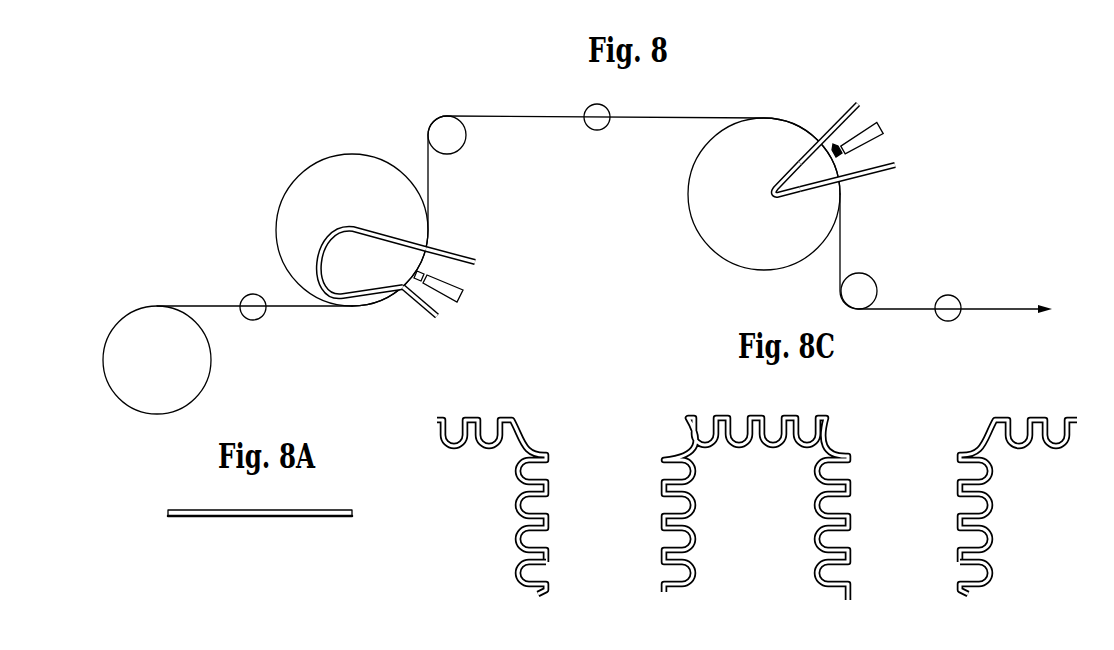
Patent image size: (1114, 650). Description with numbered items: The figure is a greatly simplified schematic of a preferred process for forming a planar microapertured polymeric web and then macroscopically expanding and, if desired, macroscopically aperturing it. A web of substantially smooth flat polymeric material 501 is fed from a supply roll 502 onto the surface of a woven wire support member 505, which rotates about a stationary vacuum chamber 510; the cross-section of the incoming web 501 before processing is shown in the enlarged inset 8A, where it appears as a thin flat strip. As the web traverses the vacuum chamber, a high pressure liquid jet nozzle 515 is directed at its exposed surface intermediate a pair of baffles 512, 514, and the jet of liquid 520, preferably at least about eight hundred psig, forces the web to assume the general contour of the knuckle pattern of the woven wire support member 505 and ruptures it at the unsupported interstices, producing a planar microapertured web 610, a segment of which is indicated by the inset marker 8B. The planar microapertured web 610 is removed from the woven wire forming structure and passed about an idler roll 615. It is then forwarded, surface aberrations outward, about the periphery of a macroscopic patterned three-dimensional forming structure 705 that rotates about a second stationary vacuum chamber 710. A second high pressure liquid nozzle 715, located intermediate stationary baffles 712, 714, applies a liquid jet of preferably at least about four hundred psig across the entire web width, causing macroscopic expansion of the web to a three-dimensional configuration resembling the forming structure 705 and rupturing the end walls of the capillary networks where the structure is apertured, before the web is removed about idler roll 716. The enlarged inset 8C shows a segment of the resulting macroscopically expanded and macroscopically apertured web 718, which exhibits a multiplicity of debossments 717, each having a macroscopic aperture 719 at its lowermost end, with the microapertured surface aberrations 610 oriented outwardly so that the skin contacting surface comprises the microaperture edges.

In FIG. 8, the web of substantially smooth flat polymeric material 501 is at (206, 306).
In FIG. 8A, the web of substantially smooth flat polymeric material 501 is at (210, 510).
In FIG. 8, the supply roll 502 is at (116, 331).
In FIG. 8, the woven wire support member 505 is at (317, 163).
In FIG. 8, the stationary vacuum chamber 510 is at (386, 230).
In FIG. 8, the baffle 512 is at (441, 315).
In FIG. 8, the baffle 514 is at (461, 257).
In FIG. 8, the high pressure liquid jet nozzle 515 is at (462, 297).
In FIG. 8, the jet of liquid 520 is at (428, 266).
In FIG. 8, the planar microapertured web 610 is at (428, 152).
In FIG. 8C, the planar microapertured web 610 is at (753, 408).
In FIG. 8, the idler roll 615 is at (467, 138).
In FIG. 8, the macroscopic patterned three-dimensional forming structure 705 is at (712, 250).
In FIG. 8, the second stationary vacuum chamber 710 is at (775, 184).
In FIG. 8, the stationary baffle 712 is at (837, 117).
In FIG. 8, the stationary baffle 714 is at (884, 170).
In FIG. 8, the second high pressure liquid nozzle 715 is at (883, 128).
In FIG. 8, the idler roll 716 is at (876, 280).
In FIG. 8C, the debossments 717 is at (617, 500).
In FIG. 8C, the macroscopically expanded and macroscopically apertured web 718 is at (793, 485).
In FIG. 8C, the macroscopic aperture 719 is at (611, 585).
In FIG. 8, the inset of FIG. 8A is at (249, 296).
In FIG. 8, the inset of FIG. 8B is at (607, 110).
In FIG. 8, the inset of FIG. 8C is at (958, 299).